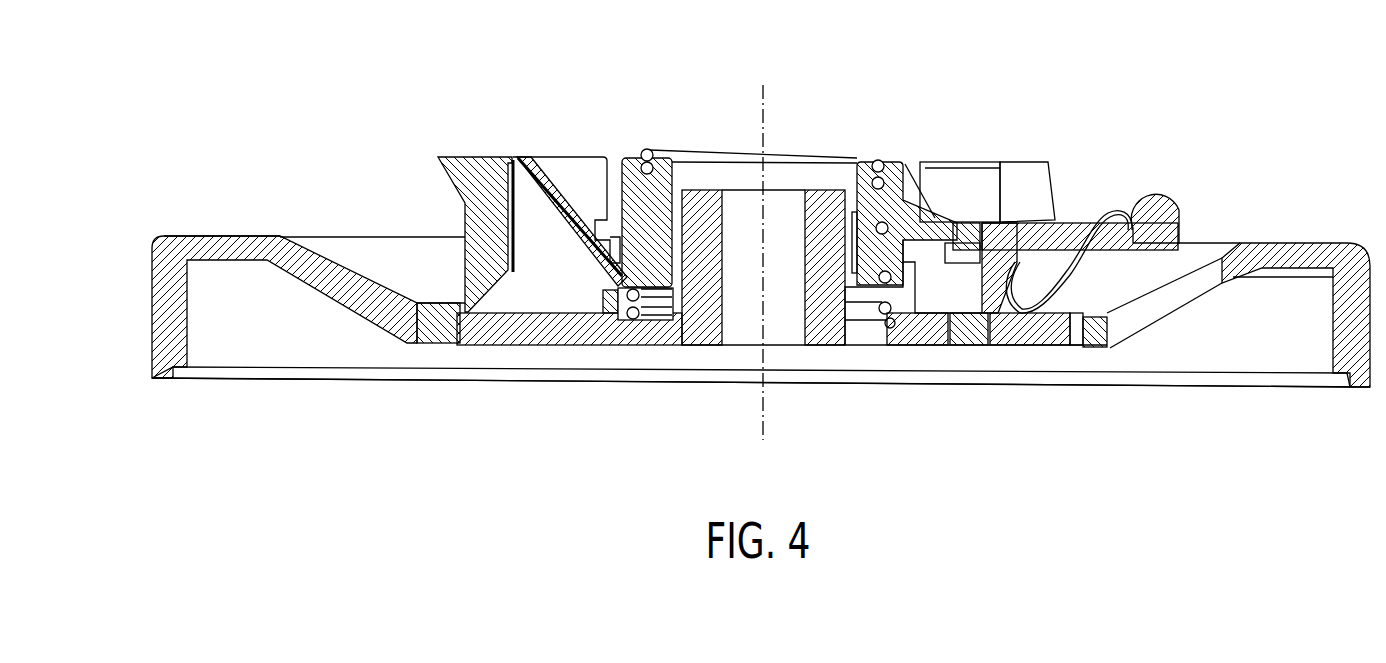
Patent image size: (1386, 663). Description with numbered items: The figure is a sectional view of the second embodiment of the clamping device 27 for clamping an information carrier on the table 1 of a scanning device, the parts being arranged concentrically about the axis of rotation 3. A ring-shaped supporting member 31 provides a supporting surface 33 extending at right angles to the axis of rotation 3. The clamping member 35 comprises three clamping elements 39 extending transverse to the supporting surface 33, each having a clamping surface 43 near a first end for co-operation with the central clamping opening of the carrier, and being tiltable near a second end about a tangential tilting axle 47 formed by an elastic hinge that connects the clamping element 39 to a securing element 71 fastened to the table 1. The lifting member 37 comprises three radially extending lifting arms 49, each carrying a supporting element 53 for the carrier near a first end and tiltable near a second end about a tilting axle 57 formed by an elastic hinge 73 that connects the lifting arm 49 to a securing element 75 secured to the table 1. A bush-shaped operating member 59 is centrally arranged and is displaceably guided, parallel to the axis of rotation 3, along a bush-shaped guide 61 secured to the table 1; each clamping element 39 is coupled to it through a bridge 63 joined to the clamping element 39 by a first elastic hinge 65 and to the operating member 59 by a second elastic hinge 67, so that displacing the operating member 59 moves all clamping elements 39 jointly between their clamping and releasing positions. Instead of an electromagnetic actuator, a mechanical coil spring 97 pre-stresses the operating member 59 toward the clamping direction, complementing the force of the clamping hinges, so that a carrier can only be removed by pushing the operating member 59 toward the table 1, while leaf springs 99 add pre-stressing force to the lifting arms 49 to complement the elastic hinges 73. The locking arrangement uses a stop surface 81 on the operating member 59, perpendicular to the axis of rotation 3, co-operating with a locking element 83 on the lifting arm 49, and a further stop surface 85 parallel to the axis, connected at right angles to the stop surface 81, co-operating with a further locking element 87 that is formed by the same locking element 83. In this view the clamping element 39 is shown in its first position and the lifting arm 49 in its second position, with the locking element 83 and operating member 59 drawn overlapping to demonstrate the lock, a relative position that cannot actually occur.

The table 1 is at (365, 375).
The axis of rotation 3 is at (765, 100).
The clamping device 27 is at (168, 433).
The supporting member 31 is at (150, 295).
The supporting surface 33 is at (197, 236).
The clamping member 35 is at (547, 128).
The lifting member 37 is at (1102, 125).
The clamping element 39 is at (462, 155).
The clamping surface 43 is at (462, 180).
The tilting axle 47 is at (453, 298).
The lifting arm 49 is at (1028, 223).
The supporting element 53 is at (1150, 185).
The tilting axle 57 is at (985, 320).
The operating member 59 is at (893, 160).
The guide 61 is at (700, 283).
The bridge 63 is at (553, 195).
The first elastic hinge 65 is at (512, 155).
The second elastic hinge 67 is at (615, 313).
The securing element 71 is at (443, 337).
The elastic hinge 73 is at (913, 292).
The securing element 75 is at (952, 330).
The stop surface 81 is at (960, 233).
The locking element 83 is at (982, 235).
The further stop surface 85 is at (975, 335).
The further locking element 87 is at (962, 253).
The coil spring 97 is at (655, 300).
The leaf spring 99 is at (1017, 295).